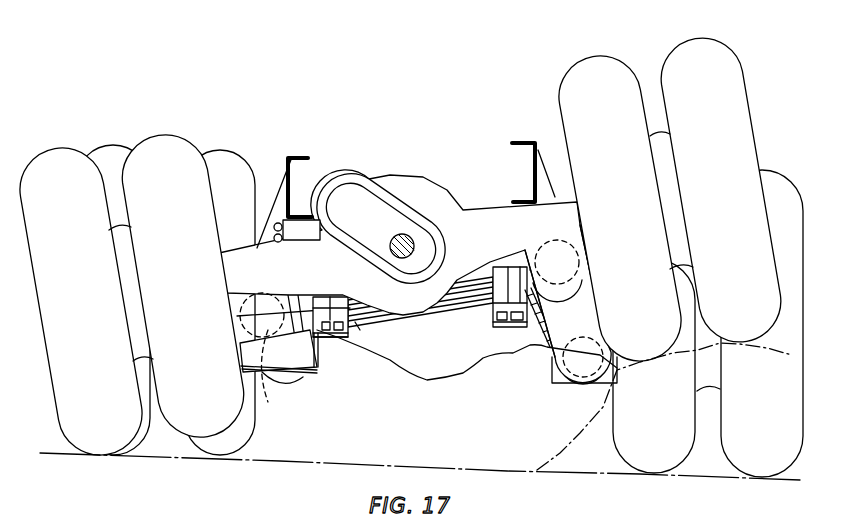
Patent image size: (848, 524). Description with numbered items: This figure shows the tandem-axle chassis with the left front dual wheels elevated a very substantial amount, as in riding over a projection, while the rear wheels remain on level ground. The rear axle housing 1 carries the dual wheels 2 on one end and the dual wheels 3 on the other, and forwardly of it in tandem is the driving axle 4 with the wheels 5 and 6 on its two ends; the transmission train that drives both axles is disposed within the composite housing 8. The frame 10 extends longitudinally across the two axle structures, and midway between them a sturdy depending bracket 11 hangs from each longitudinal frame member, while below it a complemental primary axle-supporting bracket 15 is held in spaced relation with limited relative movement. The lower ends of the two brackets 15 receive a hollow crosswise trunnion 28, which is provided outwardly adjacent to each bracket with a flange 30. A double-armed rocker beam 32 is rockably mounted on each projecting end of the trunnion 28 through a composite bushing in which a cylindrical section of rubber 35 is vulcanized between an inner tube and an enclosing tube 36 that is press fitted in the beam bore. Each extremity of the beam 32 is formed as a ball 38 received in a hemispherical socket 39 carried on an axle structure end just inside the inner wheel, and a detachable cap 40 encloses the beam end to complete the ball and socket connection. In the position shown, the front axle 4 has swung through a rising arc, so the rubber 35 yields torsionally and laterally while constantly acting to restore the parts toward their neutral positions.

The rear axle housing 1 is at (449, 378).
The dual wheels 2 is at (112, 146).
The dual wheels 3 is at (773, 180).
The driving axle 4 is at (463, 210).
The wheels 5 is at (58, 150).
The wheels 6 is at (680, 52).
The composite housing 8 is at (380, 189).
The frame bracket 10 is at (301, 156).
The depending bracket 11 is at (282, 182).
The primary axle-supporting bracket 15 is at (338, 298).
The hollow trunnion 28 is at (432, 316).
The flange 30 is at (330, 340).
The double-armed beam 32 is at (300, 350).
The cylindrical section of rubber 35 is at (358, 325).
The enclosing tube 36 is at (322, 362).
The spherical beam end 38 is at (266, 293).
The hemispherical socket 39 is at (570, 250).
The detachable cap 40 is at (285, 382).